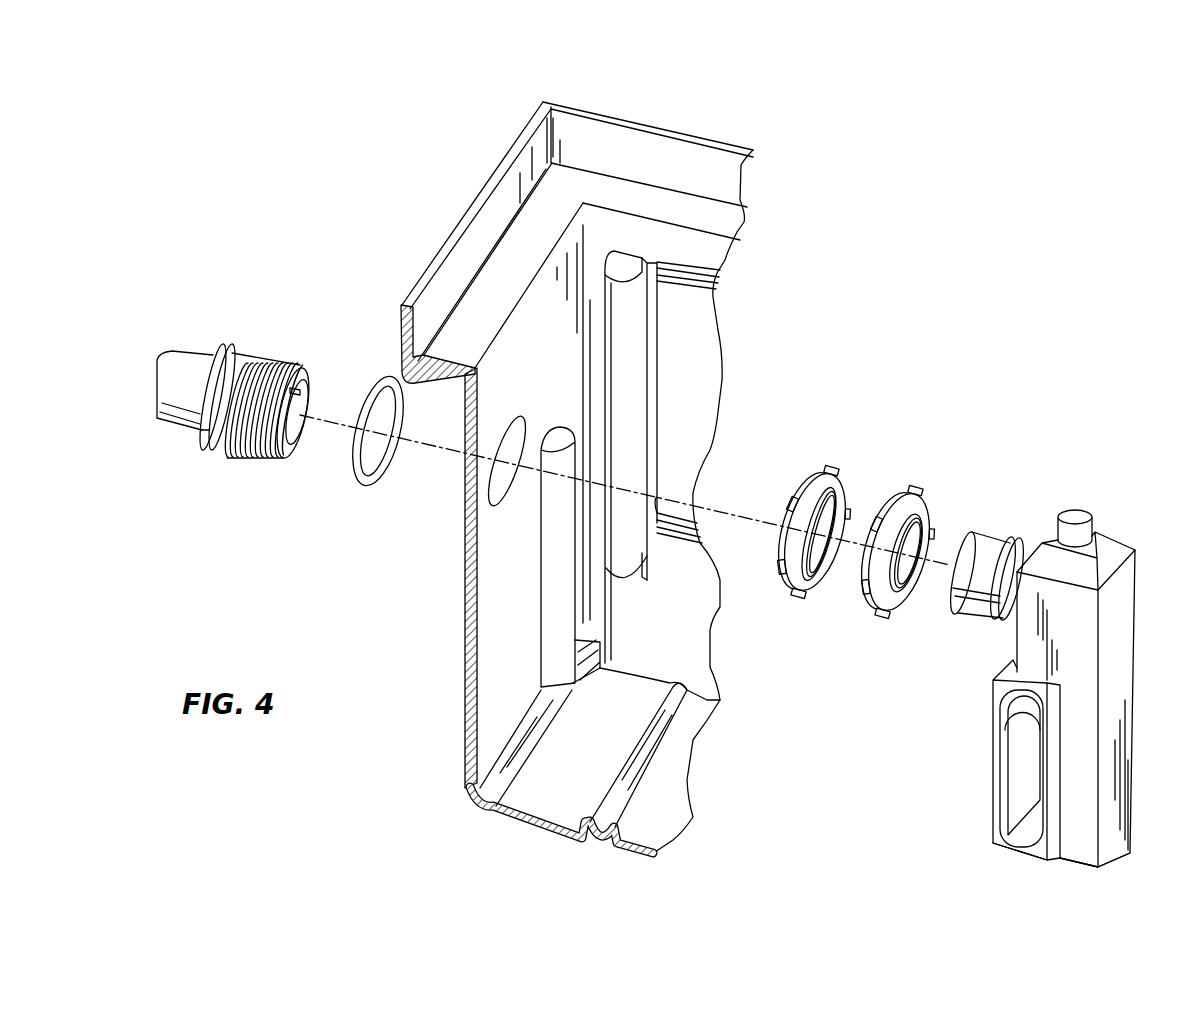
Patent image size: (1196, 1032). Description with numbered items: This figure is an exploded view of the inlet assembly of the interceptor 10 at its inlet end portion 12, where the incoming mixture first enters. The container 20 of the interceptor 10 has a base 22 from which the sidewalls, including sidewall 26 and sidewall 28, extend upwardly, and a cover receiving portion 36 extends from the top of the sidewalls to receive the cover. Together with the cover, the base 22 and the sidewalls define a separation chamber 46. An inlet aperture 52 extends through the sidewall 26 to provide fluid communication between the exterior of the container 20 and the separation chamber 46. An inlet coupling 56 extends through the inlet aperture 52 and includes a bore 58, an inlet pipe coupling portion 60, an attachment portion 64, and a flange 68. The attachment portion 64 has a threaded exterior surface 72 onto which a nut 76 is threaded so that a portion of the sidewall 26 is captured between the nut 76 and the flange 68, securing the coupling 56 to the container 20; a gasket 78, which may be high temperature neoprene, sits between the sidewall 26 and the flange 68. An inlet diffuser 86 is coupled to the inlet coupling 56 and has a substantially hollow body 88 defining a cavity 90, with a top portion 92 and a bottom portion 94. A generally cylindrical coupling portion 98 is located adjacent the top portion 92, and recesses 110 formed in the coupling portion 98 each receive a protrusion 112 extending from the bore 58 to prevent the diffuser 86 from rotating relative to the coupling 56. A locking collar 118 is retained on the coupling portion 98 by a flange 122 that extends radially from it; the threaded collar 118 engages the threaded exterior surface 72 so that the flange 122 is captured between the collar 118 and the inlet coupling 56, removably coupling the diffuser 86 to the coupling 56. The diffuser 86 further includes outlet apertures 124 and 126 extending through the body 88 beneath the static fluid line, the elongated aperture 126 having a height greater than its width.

The interceptor 10 is at (668, 76).
The inlet end portion 12 is at (606, 90).
The container 20 is at (462, 565).
The base 22 is at (548, 807).
The sidewall 26 is at (487, 645).
The sidewall 28 is at (628, 238).
The cover receiving portion 36 is at (475, 335).
The separation chamber 46 is at (645, 798).
The inlet aperture 52 is at (505, 488).
The inlet coupling 56 is at (228, 348).
The bore 58 is at (303, 435).
The inlet pipe coupling portion 60 is at (188, 360).
The attachment portion 64 is at (243, 450).
The flange 68 is at (207, 452).
The threaded exterior surface 72 is at (275, 362).
The nut 76 is at (825, 473).
The gasket 78 is at (370, 492).
The inlet diffuser 86 is at (1136, 605).
The body 88 is at (1133, 680).
The cavity 90 is at (1013, 740).
The top portion 92 is at (1120, 548).
The bottom portion 94 is at (1105, 840).
The coupling portion 98 is at (990, 555).
The recesses 110 is at (975, 600).
The protrusion 112 is at (310, 402).
The locking collar 118 is at (903, 500).
The flange 122 is at (1020, 548).
The outlet aperture 124 is at (1010, 850).
The outlet aperture 126 is at (1036, 724).